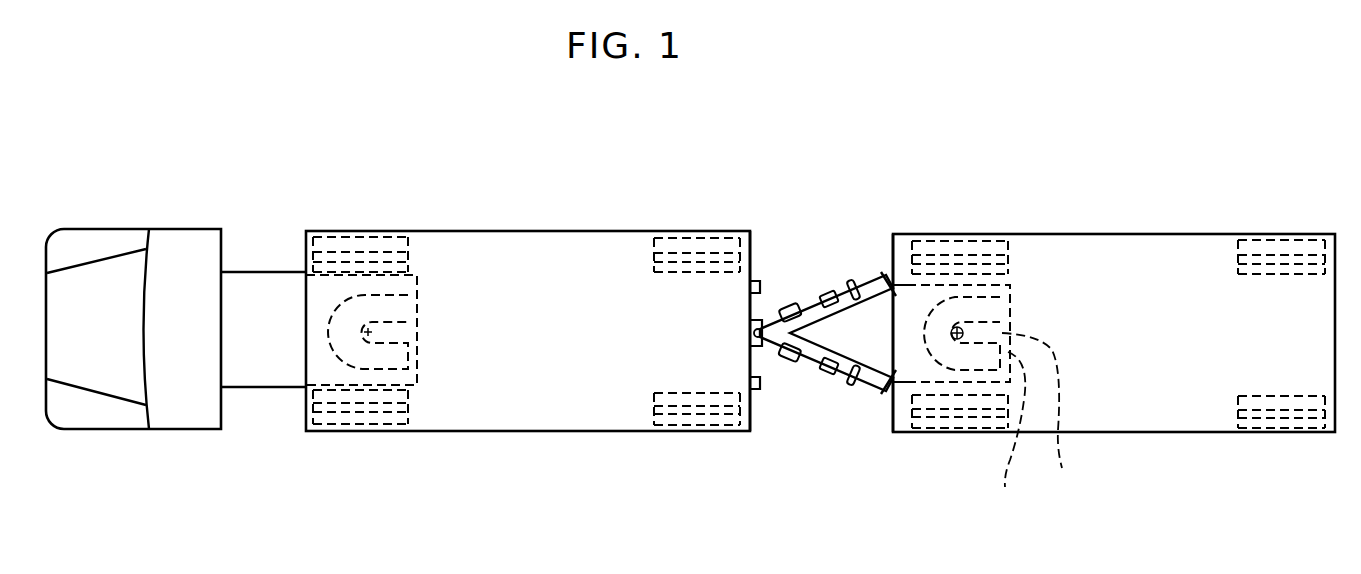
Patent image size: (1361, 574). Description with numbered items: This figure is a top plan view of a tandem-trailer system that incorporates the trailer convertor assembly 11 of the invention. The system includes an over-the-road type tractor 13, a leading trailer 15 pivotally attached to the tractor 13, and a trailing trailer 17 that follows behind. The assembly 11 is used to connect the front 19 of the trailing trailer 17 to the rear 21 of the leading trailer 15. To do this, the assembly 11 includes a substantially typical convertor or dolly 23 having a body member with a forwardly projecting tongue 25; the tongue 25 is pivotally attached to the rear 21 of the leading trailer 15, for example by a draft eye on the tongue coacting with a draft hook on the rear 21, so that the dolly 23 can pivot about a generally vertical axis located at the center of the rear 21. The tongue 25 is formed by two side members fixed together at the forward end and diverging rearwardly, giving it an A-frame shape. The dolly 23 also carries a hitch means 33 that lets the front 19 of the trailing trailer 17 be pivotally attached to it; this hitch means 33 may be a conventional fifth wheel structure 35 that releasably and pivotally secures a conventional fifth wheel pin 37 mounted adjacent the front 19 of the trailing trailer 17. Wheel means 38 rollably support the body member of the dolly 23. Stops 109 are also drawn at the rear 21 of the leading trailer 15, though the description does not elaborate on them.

The trailer convertor assembly 11 is at (818, 222).
The tractor 13 is at (168, 418).
The leading trailer 15 is at (545, 425).
The trailing trailer 17 is at (1198, 427).
The front of trailing trailer 19 is at (893, 248).
The rear of leading trailer 21 is at (752, 250).
The convertor or dolly 23 is at (815, 375).
The tongue 25 is at (765, 336).
The hitch means 33 is at (1014, 322).
The fifth wheel structure 35 is at (1020, 426).
The fifth wheel pin 37 is at (1044, 410).
The wheel means 38 is at (950, 252).
The bumper stops 109 is at (758, 281).